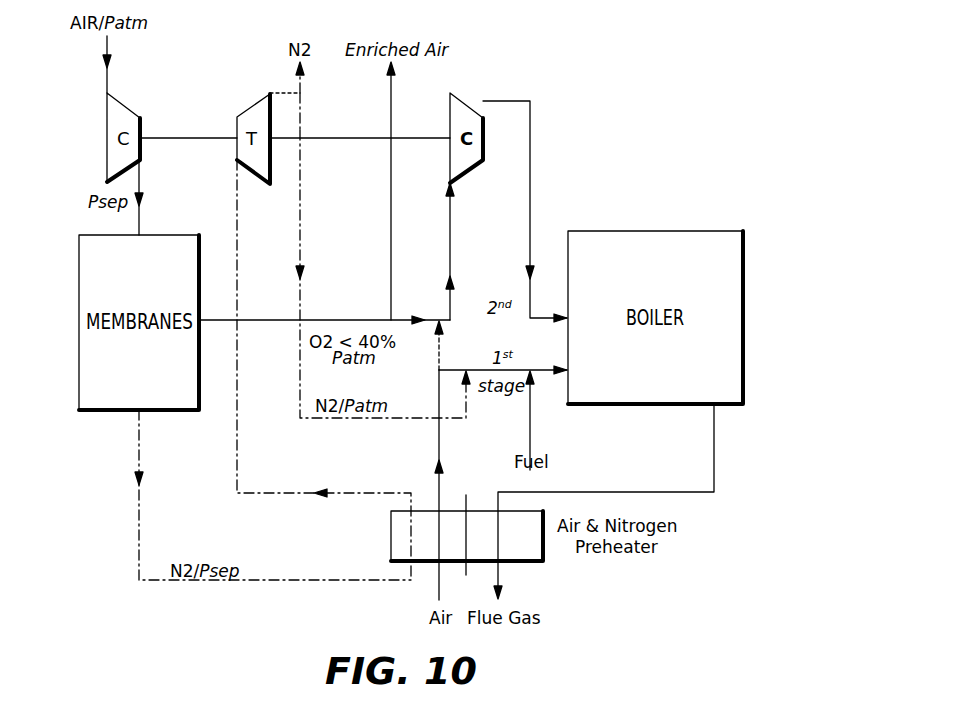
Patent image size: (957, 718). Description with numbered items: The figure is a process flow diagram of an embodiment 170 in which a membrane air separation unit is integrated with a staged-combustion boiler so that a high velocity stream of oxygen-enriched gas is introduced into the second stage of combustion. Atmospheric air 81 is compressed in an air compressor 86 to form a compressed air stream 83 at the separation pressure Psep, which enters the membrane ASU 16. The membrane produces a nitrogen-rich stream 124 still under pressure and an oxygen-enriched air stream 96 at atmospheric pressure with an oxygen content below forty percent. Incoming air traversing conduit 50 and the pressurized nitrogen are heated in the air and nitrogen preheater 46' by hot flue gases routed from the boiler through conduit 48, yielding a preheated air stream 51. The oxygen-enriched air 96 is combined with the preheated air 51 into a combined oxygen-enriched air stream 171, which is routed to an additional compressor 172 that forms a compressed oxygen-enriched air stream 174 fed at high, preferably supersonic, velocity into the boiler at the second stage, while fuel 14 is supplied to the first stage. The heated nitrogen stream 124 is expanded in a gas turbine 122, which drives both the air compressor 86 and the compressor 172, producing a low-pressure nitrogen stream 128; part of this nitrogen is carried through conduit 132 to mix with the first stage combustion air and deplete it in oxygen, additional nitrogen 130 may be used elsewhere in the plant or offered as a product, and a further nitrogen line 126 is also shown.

The air 81 is at (107, 50).
The air compressor 86 is at (107, 121).
The compressed air stream 83 is at (140, 187).
The gas turbine 122 is at (240, 113).
The low-pressure nitrogen stream 128 is at (271, 93).
The additional nitrogen 130 is at (300, 83).
The conduit 132 is at (300, 245).
The compressor 172 is at (467, 105).
The compressed oxygen-enriched air stream 174 is at (530, 138).
The combined oxygen-enriched air stream 171 is at (451, 252).
The embodiment 170 is at (618, 67).
The membrane ASU 16 is at (79, 294).
The oxygen-enriched air stream 96 is at (212, 318).
The nitrogen line from turbine 126 is at (237, 437).
The nitrogen-rich stream 124 is at (139, 510).
The preheated air stream 51 is at (437, 353).
The fuel 14 is at (530, 431).
The conduit 48 is at (714, 441).
The air and nitrogen preheater 46' is at (483, 552).
The conduit 50 is at (439, 592).